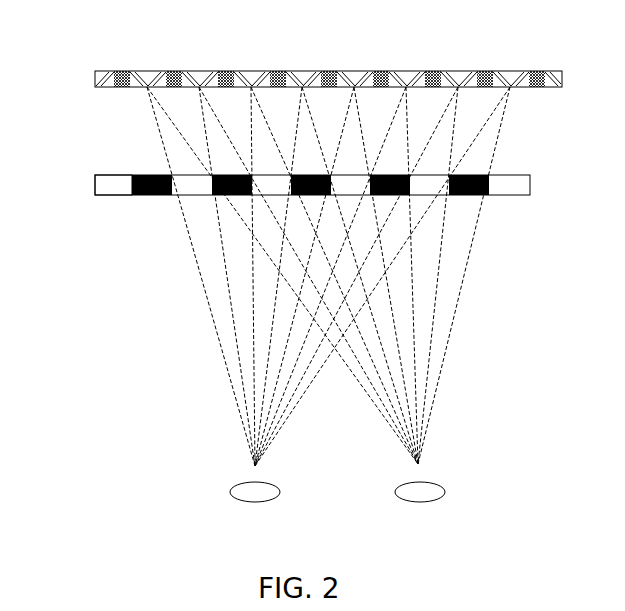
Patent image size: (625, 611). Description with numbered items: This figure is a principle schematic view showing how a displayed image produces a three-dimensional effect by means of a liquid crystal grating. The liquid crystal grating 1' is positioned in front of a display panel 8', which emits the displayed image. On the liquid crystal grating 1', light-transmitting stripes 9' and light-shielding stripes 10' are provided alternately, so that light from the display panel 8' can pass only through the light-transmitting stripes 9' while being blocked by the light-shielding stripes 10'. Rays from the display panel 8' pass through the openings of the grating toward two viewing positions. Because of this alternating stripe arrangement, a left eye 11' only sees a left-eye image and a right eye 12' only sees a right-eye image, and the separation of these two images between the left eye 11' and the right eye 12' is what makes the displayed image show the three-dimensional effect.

The display panel 8' is at (296, 52).
The liquid crystal grating 1' is at (291, 189).
The light-transmitting stripes 9' is at (97, 216).
The light-shielding stripes 10' is at (300, 216).
The left eye 11' is at (256, 510).
The right eye 12' is at (424, 509).